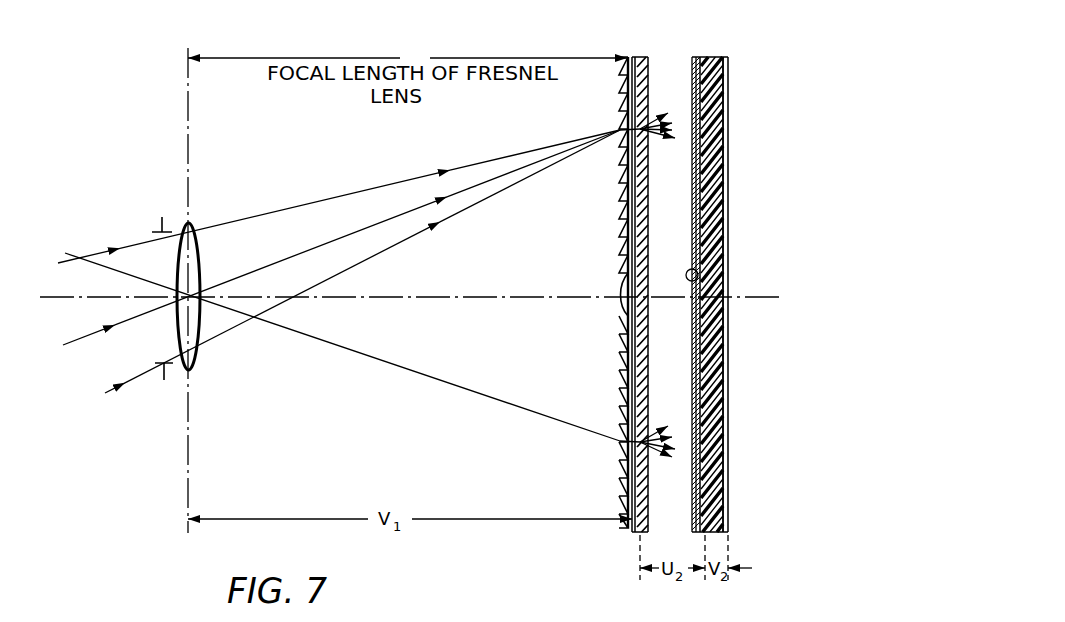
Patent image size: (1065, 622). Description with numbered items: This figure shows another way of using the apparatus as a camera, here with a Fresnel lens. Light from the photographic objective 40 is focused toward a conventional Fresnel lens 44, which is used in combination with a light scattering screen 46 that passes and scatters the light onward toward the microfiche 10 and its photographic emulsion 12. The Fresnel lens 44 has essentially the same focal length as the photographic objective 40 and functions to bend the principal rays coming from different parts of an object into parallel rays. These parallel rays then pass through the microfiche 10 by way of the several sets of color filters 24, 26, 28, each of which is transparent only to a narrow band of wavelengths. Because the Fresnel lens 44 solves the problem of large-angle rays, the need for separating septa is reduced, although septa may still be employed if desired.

The photographic objective 40 is at (198, 350).
The Fresnel lens 44 is at (620, 332).
The light scattering screen 46 is at (649, 76).
The microfiche 10 is at (713, 208).
The photographic emulsion 12 is at (730, 241).
The color filter 24 is at (765, 269).
The color filter 26 is at (765, 269).
The color filter 28 is at (700, 279).